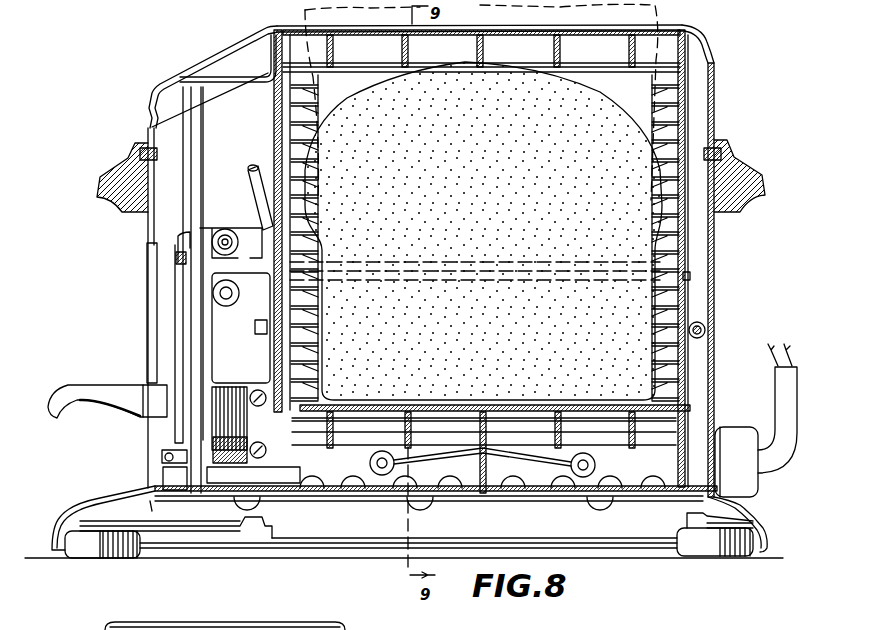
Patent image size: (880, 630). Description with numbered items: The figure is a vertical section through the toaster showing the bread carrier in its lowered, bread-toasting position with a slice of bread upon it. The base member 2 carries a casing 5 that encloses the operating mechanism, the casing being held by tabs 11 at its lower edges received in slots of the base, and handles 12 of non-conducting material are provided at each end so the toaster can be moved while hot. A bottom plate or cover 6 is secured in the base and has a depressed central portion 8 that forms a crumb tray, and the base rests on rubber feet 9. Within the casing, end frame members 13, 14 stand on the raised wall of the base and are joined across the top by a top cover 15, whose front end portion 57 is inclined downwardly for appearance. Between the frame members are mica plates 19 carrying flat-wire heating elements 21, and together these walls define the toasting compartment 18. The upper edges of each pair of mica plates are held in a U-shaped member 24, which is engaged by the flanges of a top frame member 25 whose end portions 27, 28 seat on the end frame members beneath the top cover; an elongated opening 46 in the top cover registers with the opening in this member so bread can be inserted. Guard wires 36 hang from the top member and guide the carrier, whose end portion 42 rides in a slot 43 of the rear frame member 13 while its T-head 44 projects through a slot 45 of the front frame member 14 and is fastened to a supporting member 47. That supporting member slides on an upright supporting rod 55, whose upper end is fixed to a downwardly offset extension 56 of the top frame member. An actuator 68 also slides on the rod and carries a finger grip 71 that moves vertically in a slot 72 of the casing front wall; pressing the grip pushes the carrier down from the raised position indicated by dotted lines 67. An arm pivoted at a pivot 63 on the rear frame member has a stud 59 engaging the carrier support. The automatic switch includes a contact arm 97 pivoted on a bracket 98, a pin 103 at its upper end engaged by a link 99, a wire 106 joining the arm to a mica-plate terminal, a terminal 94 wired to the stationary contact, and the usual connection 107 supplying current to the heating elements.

The base member 2 is at (93, 500).
The casing 5 is at (716, 368).
The bottom plate or cover 6 is at (135, 528).
The depressed central portion 8 is at (340, 540).
The feet 9 is at (88, 553).
The tabs 11 is at (237, 506).
The handles 12 is at (128, 176).
The end frame member 13 is at (690, 103).
The end frame member 14 is at (281, 110).
The top cover 15 is at (538, 28).
The toasting compartment 18 is at (238, 627).
The mica plates 19 is at (300, 128).
The heating elements 21 is at (347, 85).
The U-shaped member 24 is at (590, 60).
The top frame member 25 is at (597, 29).
The end portion 27 is at (698, 44).
The end portion 28 is at (266, 30).
The guard wires 36 is at (554, 50).
The end portion of bread carrier 42 is at (690, 412).
The slot 43 is at (680, 298).
The T-head 44 is at (257, 435).
The slot 45 is at (283, 233).
The elongated opening 46 is at (218, 627).
The supporting member 47 is at (182, 342).
The supporting rod 55 is at (193, 170).
The extension 56 is at (225, 80).
The front end portion 57 is at (232, 44).
The stud 59 is at (163, 457).
The pivot 63 is at (713, 331).
The dotted lines 67 is at (466, 282).
The actuator 68 is at (178, 258).
The finger grip 71 is at (67, 390).
The slot 72 is at (153, 305).
The terminal 94 is at (370, 462).
The contact arm 97 is at (228, 347).
The bracket 98 is at (243, 302).
The link 99 is at (178, 240).
The stud or pin 103 is at (226, 231).
The wire 106 is at (258, 187).
The connection 107 is at (783, 452).